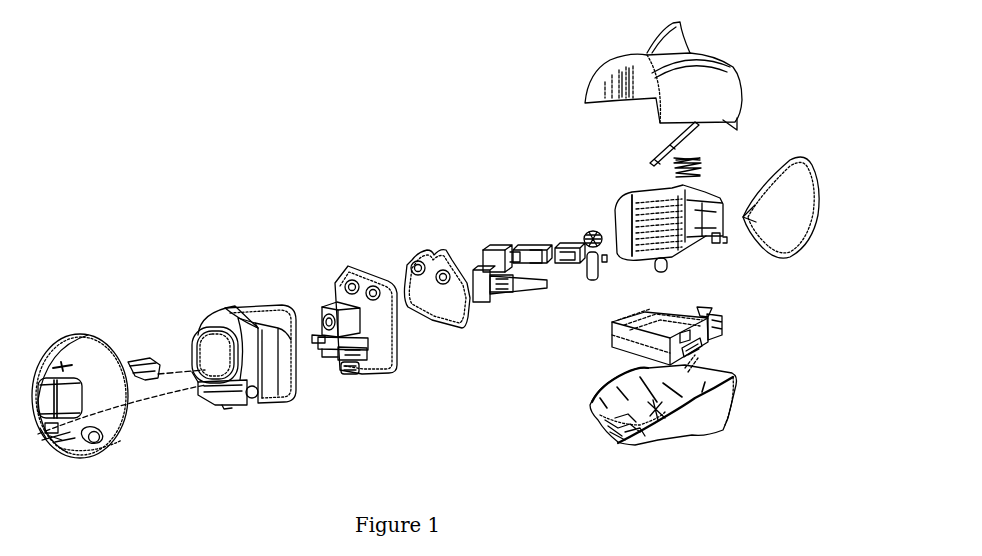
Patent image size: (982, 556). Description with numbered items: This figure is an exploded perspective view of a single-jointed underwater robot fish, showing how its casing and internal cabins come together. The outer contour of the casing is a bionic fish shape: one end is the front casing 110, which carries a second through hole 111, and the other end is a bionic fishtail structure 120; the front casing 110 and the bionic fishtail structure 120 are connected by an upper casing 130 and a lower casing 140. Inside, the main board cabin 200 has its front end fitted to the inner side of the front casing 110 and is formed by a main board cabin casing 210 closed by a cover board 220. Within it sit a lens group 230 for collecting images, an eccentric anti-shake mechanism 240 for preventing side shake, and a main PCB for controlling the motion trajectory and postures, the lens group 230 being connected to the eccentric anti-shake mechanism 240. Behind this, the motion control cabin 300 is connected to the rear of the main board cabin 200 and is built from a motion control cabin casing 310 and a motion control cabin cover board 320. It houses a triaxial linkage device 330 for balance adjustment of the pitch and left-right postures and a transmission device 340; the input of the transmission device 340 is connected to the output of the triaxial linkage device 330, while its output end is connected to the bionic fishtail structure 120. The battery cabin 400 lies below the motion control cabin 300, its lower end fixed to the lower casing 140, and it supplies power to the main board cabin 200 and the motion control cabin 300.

The front casing 110 is at (88, 357).
The second through hole 111 is at (68, 395).
The bionic fishtail structure 120 is at (790, 213).
The upper casing 130 is at (710, 80).
The lower casing 140 is at (713, 420).
The main board cabin 200 is at (367, 230).
The main board cabin casing 210 is at (233, 307).
The cover board 220 is at (370, 280).
The lens group 230 is at (352, 322).
The eccentric anti-shake mechanism 240 is at (343, 375).
The motion control cabin 300 is at (570, 172).
The motion control cabin casing 310 is at (642, 197).
The motion control cabin cover board 320 is at (440, 250).
The triaxial linkage device 330 is at (497, 297).
The transmission device 340 is at (591, 281).
The battery cabin 400 is at (718, 340).